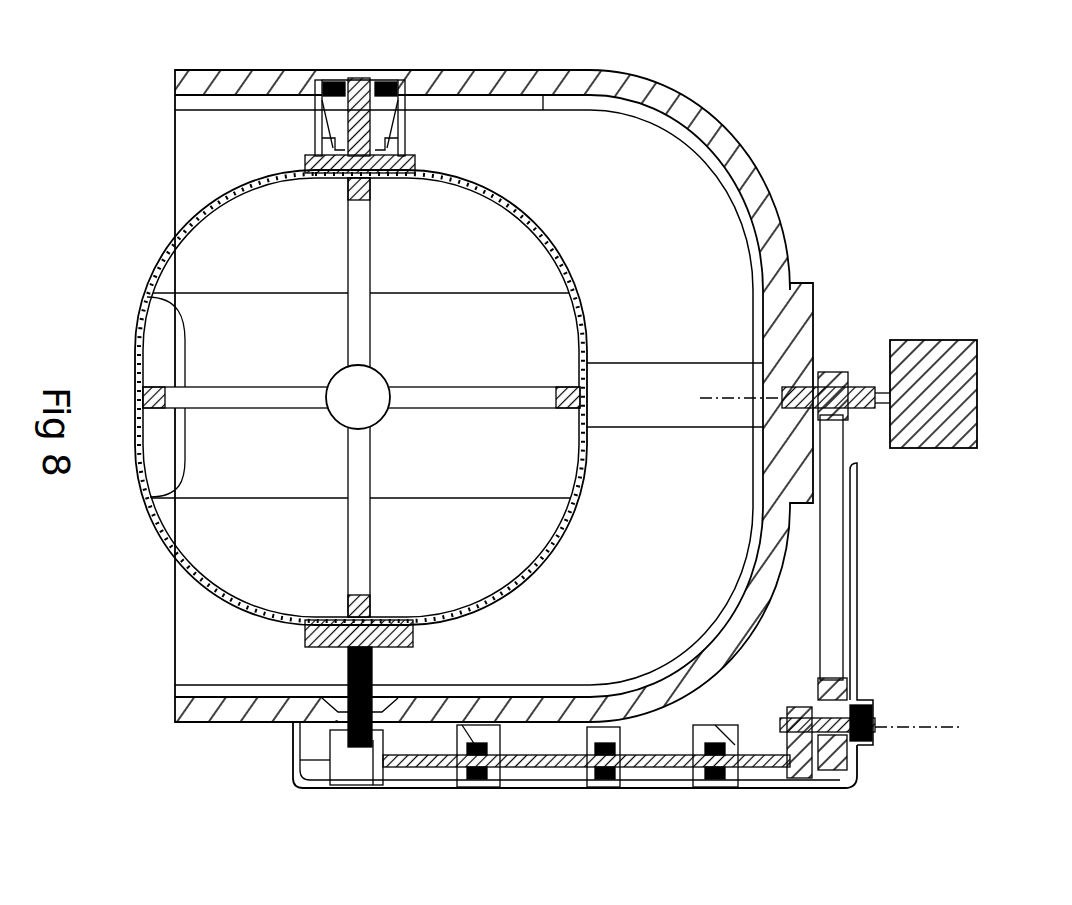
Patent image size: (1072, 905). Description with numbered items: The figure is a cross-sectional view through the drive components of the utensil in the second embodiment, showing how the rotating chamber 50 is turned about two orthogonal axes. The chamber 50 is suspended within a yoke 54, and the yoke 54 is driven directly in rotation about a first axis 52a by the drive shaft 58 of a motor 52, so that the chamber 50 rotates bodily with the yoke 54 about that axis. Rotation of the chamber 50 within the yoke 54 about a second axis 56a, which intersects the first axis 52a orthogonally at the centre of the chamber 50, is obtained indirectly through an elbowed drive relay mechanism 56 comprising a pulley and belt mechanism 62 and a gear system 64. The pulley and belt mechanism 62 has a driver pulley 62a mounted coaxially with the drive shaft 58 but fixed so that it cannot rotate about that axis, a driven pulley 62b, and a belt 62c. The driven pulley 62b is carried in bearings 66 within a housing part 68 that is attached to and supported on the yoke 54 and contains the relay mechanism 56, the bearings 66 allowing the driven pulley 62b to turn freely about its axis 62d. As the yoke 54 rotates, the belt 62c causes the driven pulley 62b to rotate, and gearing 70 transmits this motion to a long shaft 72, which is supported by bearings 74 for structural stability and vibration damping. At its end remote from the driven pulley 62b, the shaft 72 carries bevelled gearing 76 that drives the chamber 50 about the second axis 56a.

The rotating chamber 50 is at (540, 222).
The motor 52 is at (972, 406).
The first axis 52a is at (745, 385).
The yoke 54 is at (755, 205).
The elbowed drive relay mechanism 56 is at (876, 655).
The second axis 56a is at (363, 40).
The drive shaft 58 is at (835, 380).
The pulley and belt mechanism 62 is at (894, 580).
The driver pulley 62a is at (850, 422).
The driven pulley 62b is at (844, 757).
The belt 62c is at (840, 548).
The axis of driven pulley 62d is at (948, 730).
The gear system 64 is at (672, 733).
The bearings 66 is at (873, 715).
The housing part 68 is at (853, 785).
The gearing 70 is at (800, 776).
The long shaft 72 is at (648, 776).
The bearings 74 is at (490, 782).
The bevelled gearing 76 is at (352, 766).